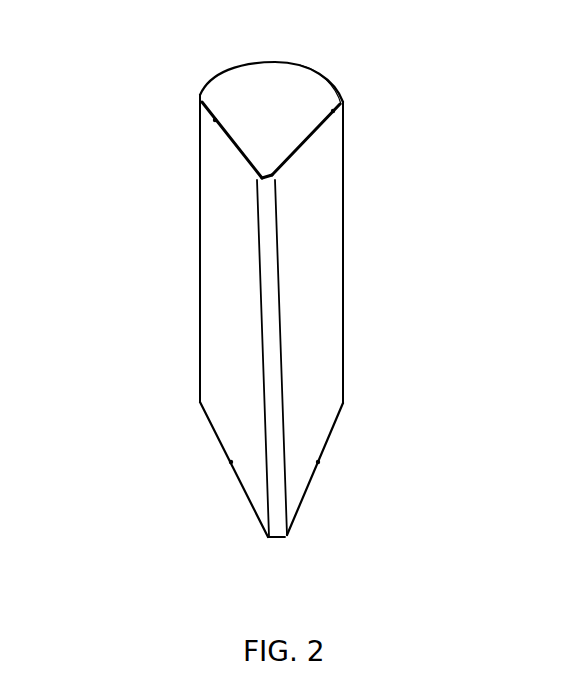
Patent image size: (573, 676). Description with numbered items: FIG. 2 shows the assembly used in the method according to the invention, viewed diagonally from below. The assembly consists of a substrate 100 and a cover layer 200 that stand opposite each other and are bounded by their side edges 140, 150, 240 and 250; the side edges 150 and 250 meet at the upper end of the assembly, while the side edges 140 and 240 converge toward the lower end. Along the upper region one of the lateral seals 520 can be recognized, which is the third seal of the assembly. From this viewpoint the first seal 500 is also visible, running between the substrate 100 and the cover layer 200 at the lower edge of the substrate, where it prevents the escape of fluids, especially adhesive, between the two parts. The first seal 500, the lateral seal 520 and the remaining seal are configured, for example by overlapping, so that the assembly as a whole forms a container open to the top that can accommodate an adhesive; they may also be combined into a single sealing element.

The substrate 100 is at (227, 320).
The cover layer 200 is at (322, 278).
The side edge 150 is at (215, 121).
The side edge 250 is at (341, 108).
The lateral seal 520 is at (282, 93).
The side edge 140 is at (231, 463).
The side edge 240 is at (318, 463).
The first seal 500 is at (275, 490).